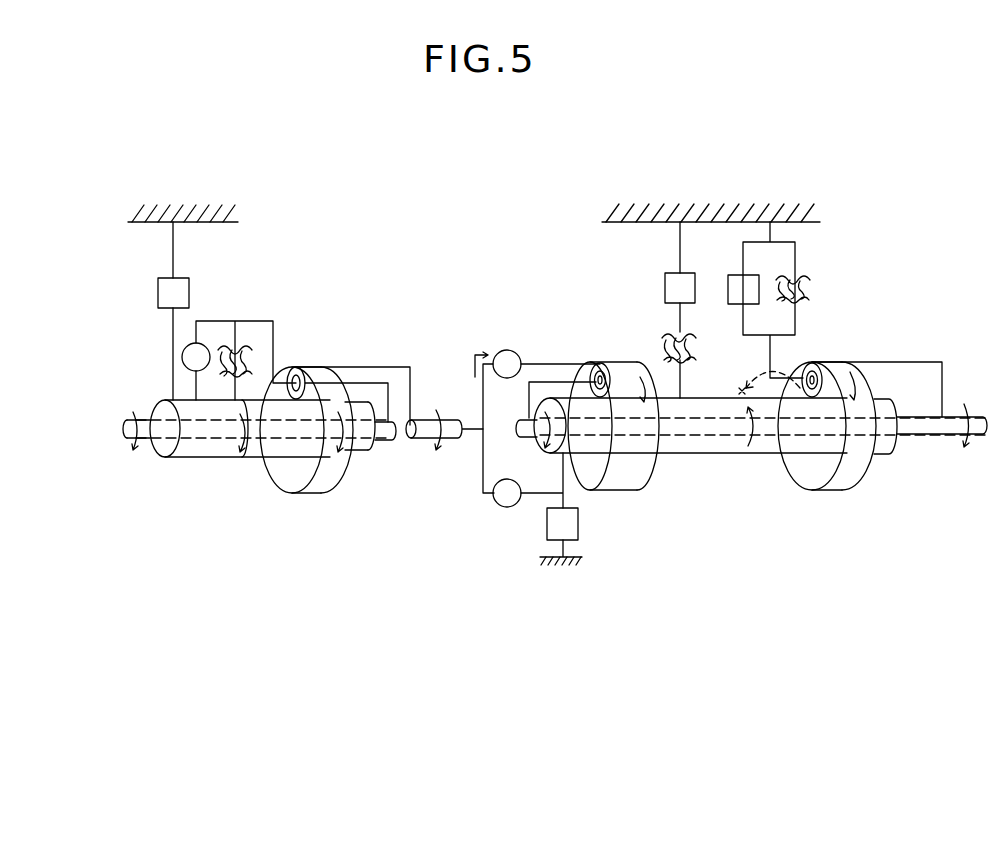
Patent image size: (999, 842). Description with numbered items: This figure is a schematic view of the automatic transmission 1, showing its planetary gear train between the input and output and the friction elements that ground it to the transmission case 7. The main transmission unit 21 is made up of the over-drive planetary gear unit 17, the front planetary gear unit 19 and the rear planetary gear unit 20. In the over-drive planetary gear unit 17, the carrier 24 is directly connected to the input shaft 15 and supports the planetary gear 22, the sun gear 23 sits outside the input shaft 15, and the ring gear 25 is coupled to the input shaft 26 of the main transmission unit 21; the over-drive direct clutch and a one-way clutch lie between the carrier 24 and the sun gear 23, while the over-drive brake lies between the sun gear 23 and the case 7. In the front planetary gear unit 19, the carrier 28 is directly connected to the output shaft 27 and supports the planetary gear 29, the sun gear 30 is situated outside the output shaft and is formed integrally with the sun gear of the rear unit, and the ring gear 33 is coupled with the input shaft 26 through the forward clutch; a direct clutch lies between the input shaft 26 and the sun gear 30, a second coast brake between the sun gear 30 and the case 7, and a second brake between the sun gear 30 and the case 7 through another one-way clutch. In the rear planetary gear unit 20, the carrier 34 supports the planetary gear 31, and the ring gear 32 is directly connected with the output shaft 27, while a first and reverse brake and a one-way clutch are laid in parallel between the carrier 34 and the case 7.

The automatic transmission 1 is at (500, 207).
The transmission case 7 is at (197, 224).
The input shaft 15 is at (150, 424).
The over-drive planetary gear unit 17 is at (304, 330).
The front planetary gear unit 19 is at (630, 350).
The rear planetary gear unit 20 is at (853, 335).
The main transmission unit 21 is at (607, 328).
The planetary gear 22 is at (304, 365).
The sun gear 23 is at (242, 458).
The carrier 24 is at (274, 345).
The ring gear 25 is at (336, 478).
The input shaft 26 is at (446, 441).
The output shaft 27 is at (935, 434).
The carrier 28 is at (562, 380).
The planetary gear 29 is at (606, 335).
The sun gear 30 is at (731, 454).
The planetary gear 31 is at (803, 370).
The ring gear 32 is at (858, 364).
The ring gear 33 is at (628, 483).
The carrier 34 is at (770, 367).